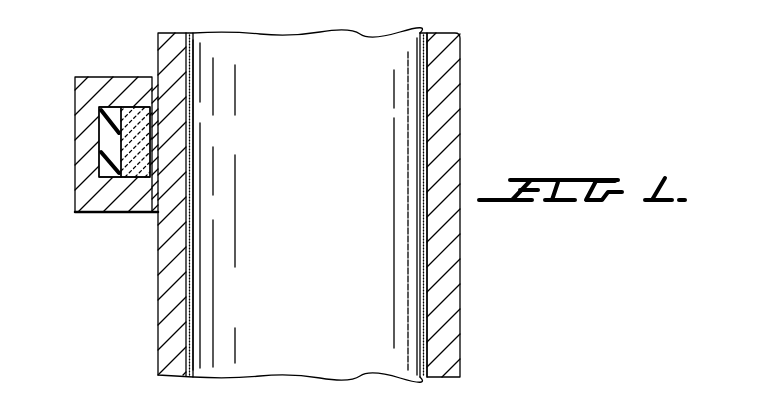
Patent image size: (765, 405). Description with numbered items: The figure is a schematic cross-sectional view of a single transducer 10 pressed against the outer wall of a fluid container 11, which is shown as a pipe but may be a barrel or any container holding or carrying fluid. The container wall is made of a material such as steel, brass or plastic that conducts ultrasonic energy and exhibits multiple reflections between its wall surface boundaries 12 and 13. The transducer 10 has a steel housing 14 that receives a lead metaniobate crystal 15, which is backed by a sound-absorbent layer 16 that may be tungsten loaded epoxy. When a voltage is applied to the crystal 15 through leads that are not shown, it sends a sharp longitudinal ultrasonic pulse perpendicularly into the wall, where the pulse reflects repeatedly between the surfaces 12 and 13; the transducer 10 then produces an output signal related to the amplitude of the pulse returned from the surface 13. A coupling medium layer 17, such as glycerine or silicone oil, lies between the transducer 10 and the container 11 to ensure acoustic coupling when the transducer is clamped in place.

The transducer 10 is at (99, 55).
The container 11 is at (458, 95).
The inner wall surface boundary 12 is at (163, 276).
The inner wall surface boundary 13 is at (188, 308).
The steel housing 14 is at (112, 77).
The lead metaniobate crystal 15 is at (128, 155).
The sound-absorbent layer 16 is at (100, 125).
The coupling medium layer 17 is at (150, 216).